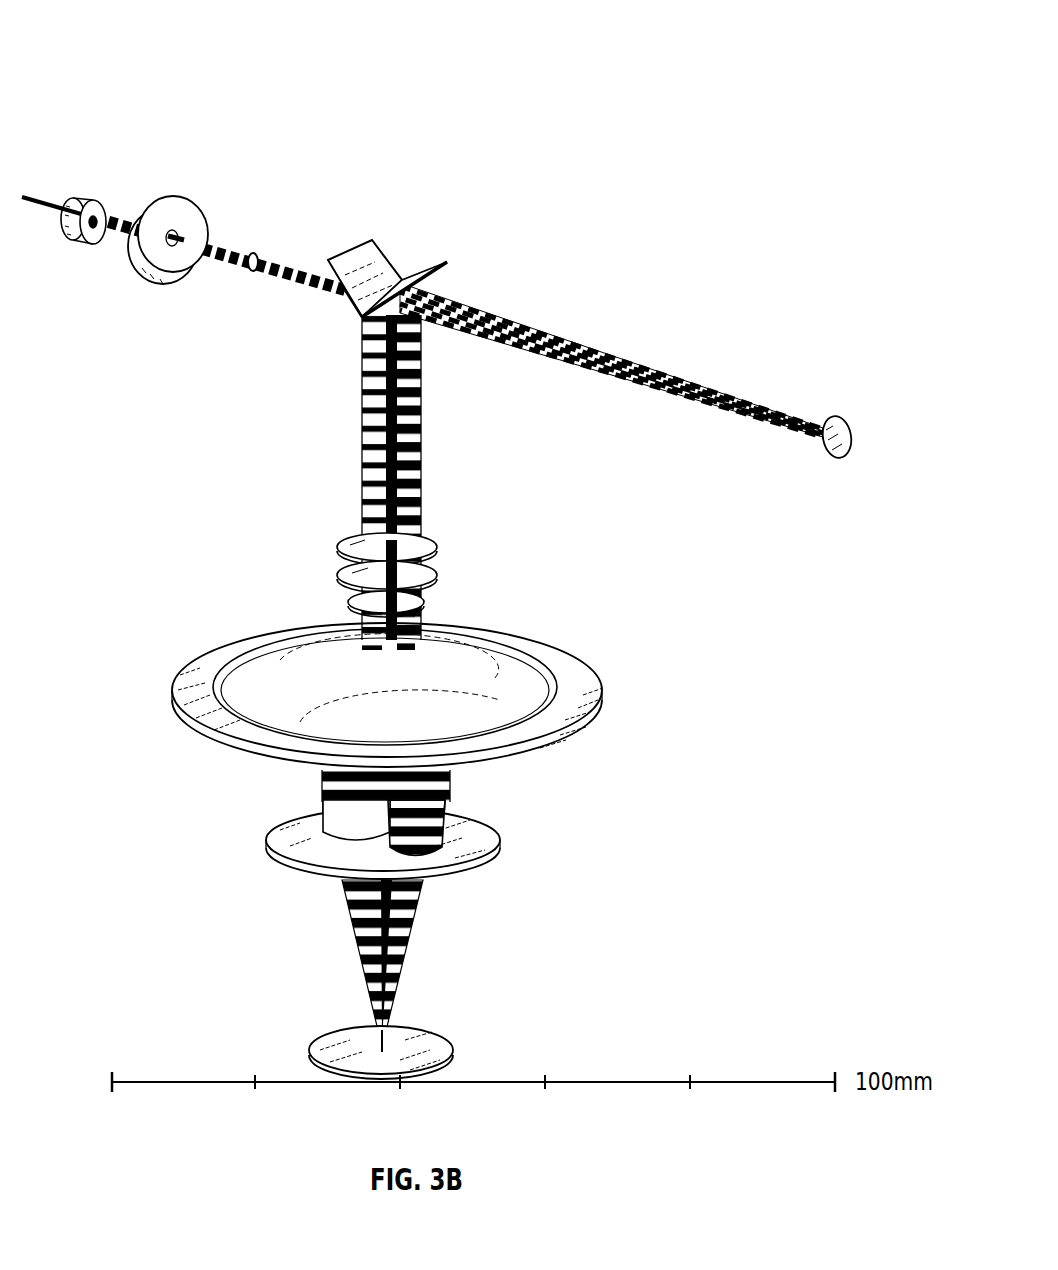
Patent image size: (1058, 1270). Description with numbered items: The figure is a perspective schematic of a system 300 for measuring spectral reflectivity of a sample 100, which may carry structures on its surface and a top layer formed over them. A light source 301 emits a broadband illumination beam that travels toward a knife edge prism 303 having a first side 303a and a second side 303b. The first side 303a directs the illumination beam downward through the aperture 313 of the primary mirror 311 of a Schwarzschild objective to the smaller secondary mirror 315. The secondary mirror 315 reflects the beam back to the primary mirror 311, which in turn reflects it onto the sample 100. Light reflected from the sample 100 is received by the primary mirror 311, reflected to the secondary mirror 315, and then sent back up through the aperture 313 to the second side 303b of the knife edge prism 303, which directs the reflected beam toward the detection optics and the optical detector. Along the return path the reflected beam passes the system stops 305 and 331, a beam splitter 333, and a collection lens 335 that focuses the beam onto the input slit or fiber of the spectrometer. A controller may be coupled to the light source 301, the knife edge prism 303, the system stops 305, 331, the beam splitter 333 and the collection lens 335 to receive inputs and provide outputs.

The system 300 is at (153, 96).
The light source 301 is at (832, 458).
The knife edge prism 303 is at (393, 258).
The first side 303a is at (433, 280).
The second side 303b is at (353, 305).
The system stop 305 is at (437, 575).
The primary mirror 311 is at (603, 695).
The aperture 313 is at (417, 692).
The secondary mirror 315 is at (490, 862).
The system stop aperture 331 is at (337, 575).
The beam splitter 333 is at (172, 199).
The collection lens 335 is at (75, 197).
The sample 100 is at (443, 1030).